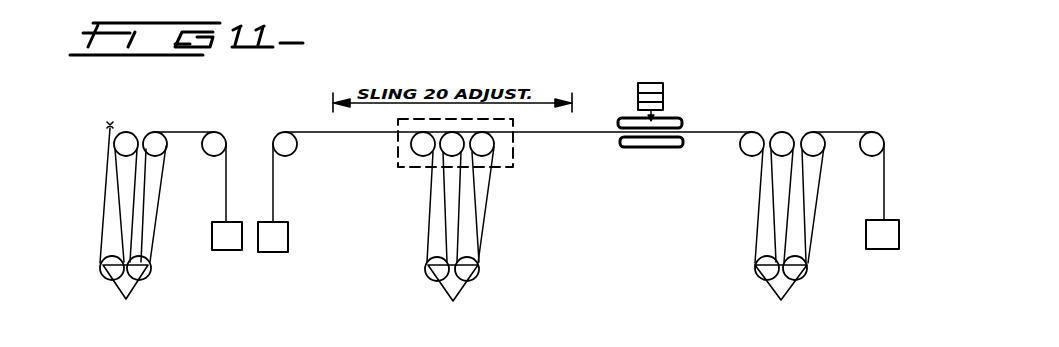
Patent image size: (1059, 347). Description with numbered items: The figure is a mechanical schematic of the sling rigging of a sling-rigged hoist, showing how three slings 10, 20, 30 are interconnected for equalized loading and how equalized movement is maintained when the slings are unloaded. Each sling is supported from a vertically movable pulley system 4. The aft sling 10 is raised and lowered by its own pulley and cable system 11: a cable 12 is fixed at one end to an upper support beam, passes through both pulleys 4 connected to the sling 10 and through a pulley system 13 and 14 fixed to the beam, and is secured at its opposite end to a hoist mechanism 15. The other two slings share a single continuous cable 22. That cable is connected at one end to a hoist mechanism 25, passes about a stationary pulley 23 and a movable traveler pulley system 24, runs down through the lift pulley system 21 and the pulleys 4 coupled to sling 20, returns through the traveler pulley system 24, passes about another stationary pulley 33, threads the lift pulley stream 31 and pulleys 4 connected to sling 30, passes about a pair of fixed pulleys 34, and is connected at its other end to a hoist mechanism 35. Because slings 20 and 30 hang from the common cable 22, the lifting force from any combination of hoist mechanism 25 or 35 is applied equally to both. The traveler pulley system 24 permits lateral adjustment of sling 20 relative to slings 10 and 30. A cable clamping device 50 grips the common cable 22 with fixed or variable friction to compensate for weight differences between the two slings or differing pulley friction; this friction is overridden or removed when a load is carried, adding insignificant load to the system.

The movable pulley system 4 is at (149, 277).
The aft sling 10 is at (112, 297).
The pulley and cable system 11 is at (101, 197).
The cable 12 is at (102, 228).
The pulley system 13 is at (159, 155).
The pulley system 14 is at (207, 153).
The hoist mechanism 15 is at (219, 250).
The sling 20 is at (436, 297).
The lift pulley system 21 is at (530, 223).
The continuous cable 22 is at (325, 133).
The stationary pulley 23 is at (293, 155).
The traveler pulley system 24 is at (513, 155).
The hoist mechanism 25 is at (268, 253).
The sling 30 is at (867, 318).
The lift pulley stream 31 is at (863, 206).
The stationary pulley 33 is at (739, 150).
The fixed pulleys 34 is at (865, 155).
The hoist mechanism 35 is at (873, 250).
The cable clamping device 50 is at (657, 74).